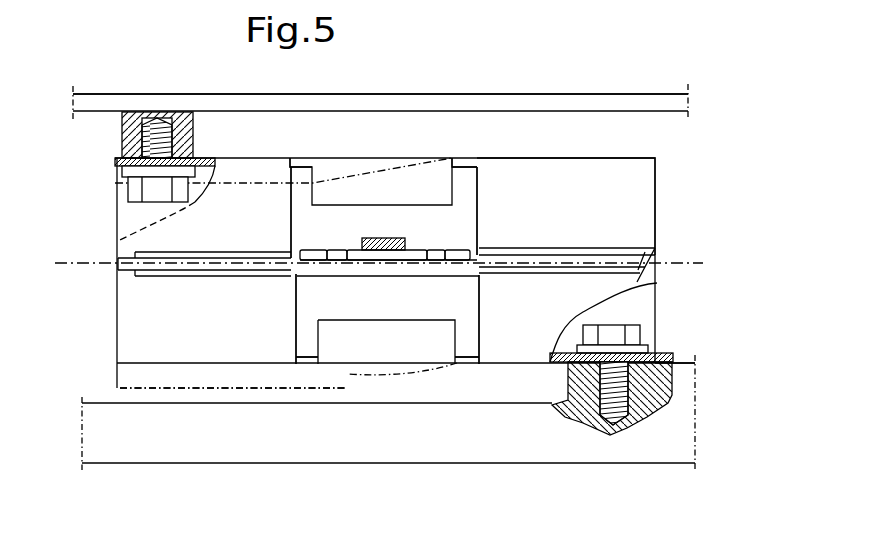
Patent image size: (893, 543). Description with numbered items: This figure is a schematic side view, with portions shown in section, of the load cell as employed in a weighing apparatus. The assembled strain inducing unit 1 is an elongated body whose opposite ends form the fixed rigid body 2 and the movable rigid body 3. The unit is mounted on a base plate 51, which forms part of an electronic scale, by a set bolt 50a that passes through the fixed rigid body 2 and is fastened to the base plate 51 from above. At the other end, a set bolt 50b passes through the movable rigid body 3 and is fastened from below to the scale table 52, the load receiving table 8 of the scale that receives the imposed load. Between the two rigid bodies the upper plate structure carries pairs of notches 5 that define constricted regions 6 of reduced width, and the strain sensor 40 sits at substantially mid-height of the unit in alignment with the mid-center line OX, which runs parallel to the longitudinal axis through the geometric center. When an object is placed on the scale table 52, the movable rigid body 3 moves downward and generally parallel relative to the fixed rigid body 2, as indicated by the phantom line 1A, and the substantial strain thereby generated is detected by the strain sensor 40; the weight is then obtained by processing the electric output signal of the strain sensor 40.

The strain inducing unit 1 is at (670, 174).
The phantom line 1A is at (218, 384).
The fixed rigid body 2 is at (657, 240).
The movable rigid body 3 is at (150, 297).
The notches 5 is at (297, 160).
The constricted regions 6 is at (308, 158).
The load receiving table 8 is at (612, 82).
The strain sensor 40 is at (440, 237).
The set bolt 50a is at (610, 340).
The set bolt 50b is at (150, 183).
The base plate 51 is at (387, 430).
The scale table 52 is at (417, 104).
The mid-center line OX is at (703, 260).